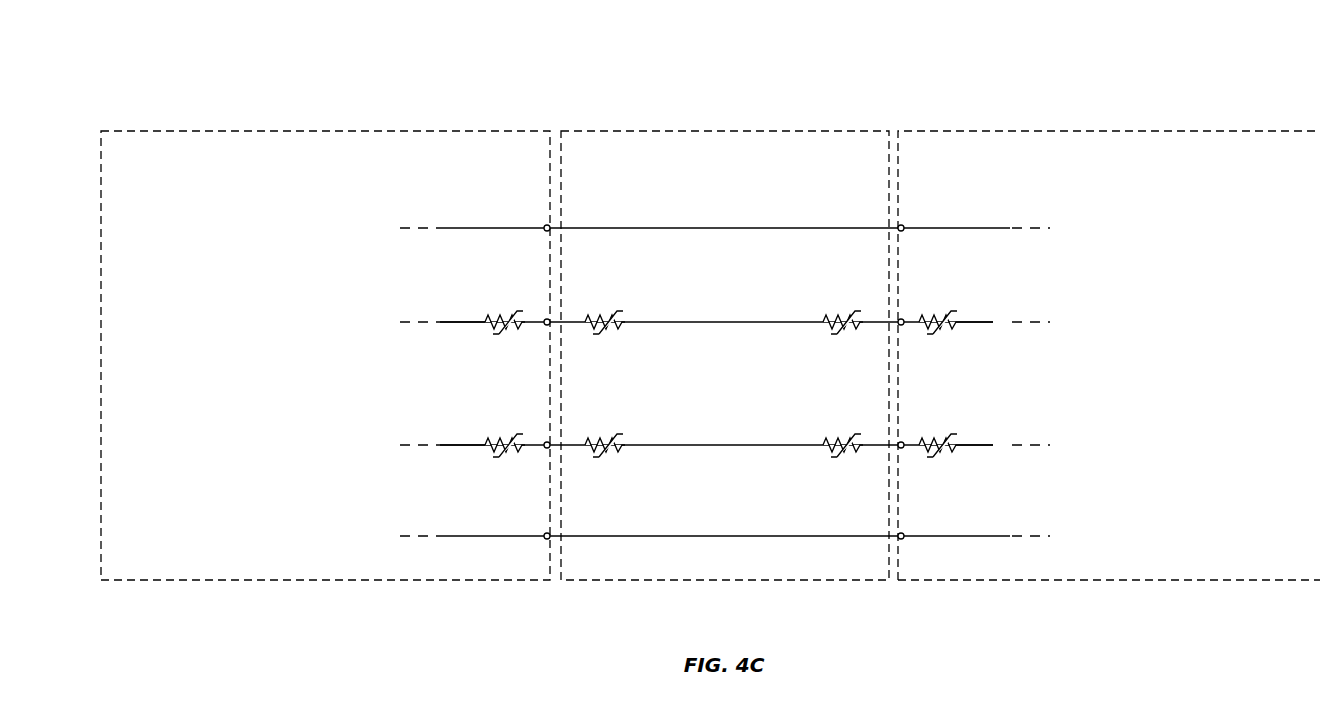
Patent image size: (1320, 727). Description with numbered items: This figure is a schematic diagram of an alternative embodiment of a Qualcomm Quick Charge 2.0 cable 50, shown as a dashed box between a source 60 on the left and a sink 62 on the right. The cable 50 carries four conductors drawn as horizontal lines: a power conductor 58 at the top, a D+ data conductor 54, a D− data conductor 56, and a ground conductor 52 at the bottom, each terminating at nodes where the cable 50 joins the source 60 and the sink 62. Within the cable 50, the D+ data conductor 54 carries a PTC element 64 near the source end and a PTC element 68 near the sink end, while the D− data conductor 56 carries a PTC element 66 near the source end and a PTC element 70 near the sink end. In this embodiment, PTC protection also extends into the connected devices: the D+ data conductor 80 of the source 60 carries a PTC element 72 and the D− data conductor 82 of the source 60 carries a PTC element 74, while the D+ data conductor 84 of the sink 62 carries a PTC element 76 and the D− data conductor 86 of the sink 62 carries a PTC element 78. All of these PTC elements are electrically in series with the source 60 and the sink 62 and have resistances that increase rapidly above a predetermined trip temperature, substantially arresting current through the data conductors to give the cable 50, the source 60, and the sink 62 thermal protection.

The cable 50 is at (733, 130).
The ground conductor 52 is at (717, 535).
The D+ data conductor 54 is at (708, 321).
The D− data conductor 56 is at (713, 444).
The power conductor 58 is at (705, 227).
The source device 60 is at (292, 130).
The sink device 62 is at (1150, 130).
The PTC element 64 is at (612, 318).
The PTC element 66 is at (612, 441).
The PTC element 68 is at (850, 318).
The PTC element 70 is at (850, 441).
The PTC element 72 is at (512, 318).
The PTC element 74 is at (512, 441).
The PTC element 76 is at (947, 318).
The PTC element 78 is at (947, 441).
The D+ data conductor of the source 80 is at (465, 321).
The D− data conductor of the source 82 is at (467, 444).
The D+ data conductor of the sink 84 is at (991, 321).
The D− data conductor of the sink 86 is at (991, 444).